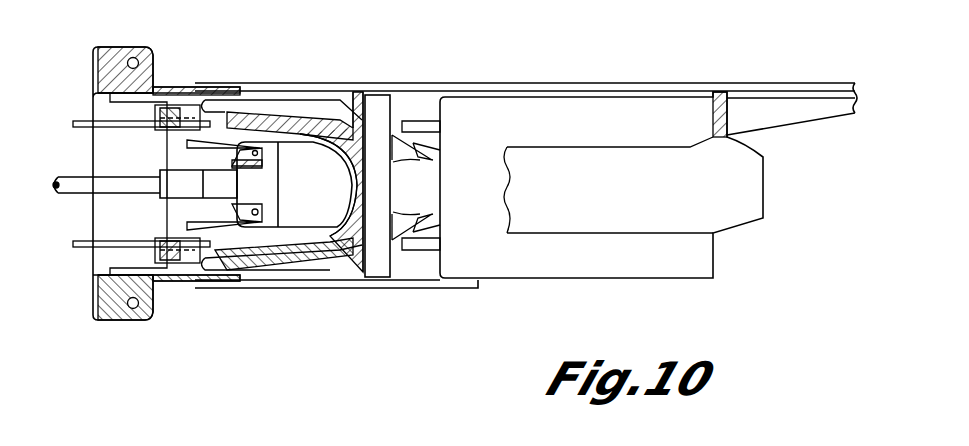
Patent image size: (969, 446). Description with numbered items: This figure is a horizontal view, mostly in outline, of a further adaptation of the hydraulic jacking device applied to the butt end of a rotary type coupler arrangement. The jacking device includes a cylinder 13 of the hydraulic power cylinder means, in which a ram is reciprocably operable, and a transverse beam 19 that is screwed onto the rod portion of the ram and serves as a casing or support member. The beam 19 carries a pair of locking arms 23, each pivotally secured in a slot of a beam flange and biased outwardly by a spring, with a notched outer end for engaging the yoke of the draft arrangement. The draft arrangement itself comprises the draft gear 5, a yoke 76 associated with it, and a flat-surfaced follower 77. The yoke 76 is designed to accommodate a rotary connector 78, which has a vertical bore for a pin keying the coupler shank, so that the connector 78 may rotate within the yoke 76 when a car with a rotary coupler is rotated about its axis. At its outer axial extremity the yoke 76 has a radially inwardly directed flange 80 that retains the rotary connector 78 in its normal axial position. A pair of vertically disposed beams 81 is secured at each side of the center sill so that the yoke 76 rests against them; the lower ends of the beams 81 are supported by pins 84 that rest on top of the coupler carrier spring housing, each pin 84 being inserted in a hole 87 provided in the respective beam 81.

The draft gear 5 is at (633, 108).
The cylinder 13 is at (345, 166).
The transverse beam 19 is at (266, 193).
The locking arm 23 is at (200, 133).
The yoke 76 is at (238, 268).
The flat-surfaced follower 77 is at (380, 100).
The rotary connector 78 is at (300, 118).
The radially inwardly directed flange 80 is at (220, 103).
The vertically disposed beam 81 is at (183, 107).
The pin 84 is at (97, 128).
The hole 87 is at (188, 118).